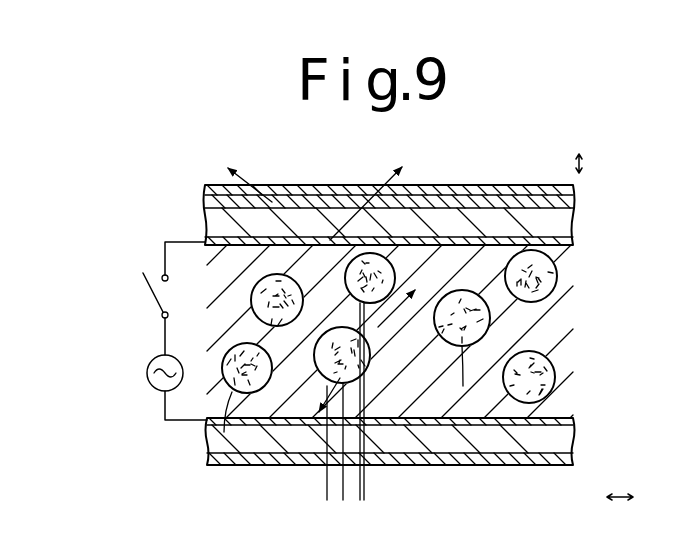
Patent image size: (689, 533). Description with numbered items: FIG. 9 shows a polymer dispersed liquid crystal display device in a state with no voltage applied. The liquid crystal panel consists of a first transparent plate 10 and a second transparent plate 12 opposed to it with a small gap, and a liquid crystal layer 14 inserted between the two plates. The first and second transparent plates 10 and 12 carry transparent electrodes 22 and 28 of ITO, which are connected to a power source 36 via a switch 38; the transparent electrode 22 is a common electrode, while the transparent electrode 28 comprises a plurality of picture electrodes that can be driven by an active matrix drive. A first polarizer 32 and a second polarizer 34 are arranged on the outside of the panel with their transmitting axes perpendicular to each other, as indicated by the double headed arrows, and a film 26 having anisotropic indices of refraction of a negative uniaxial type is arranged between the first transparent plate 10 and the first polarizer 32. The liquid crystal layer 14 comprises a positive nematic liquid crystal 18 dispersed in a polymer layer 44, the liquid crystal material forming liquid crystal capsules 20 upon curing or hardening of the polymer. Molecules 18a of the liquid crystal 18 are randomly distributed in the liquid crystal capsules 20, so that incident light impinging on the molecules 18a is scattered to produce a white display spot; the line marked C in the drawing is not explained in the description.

The first transparent plate 10 is at (574, 228).
The second transparent plate 12 is at (567, 433).
The liquid crystal layer 14 is at (582, 348).
The liquid crystal 18 is at (251, 393).
The molecules of the liquid crystal 18a is at (523, 400).
The liquid crystal capsules 20 is at (224, 432).
The transparent electrode 22 is at (203, 230).
The film 26 is at (574, 200).
The transparent electrode 28 is at (202, 440).
The first polarizer 32 is at (509, 189).
The second polarizer 34 is at (568, 462).
The power source 36 is at (147, 386).
The switch 38 is at (146, 280).
The polymer layer 44 is at (559, 294).
The center line C is at (366, 493).